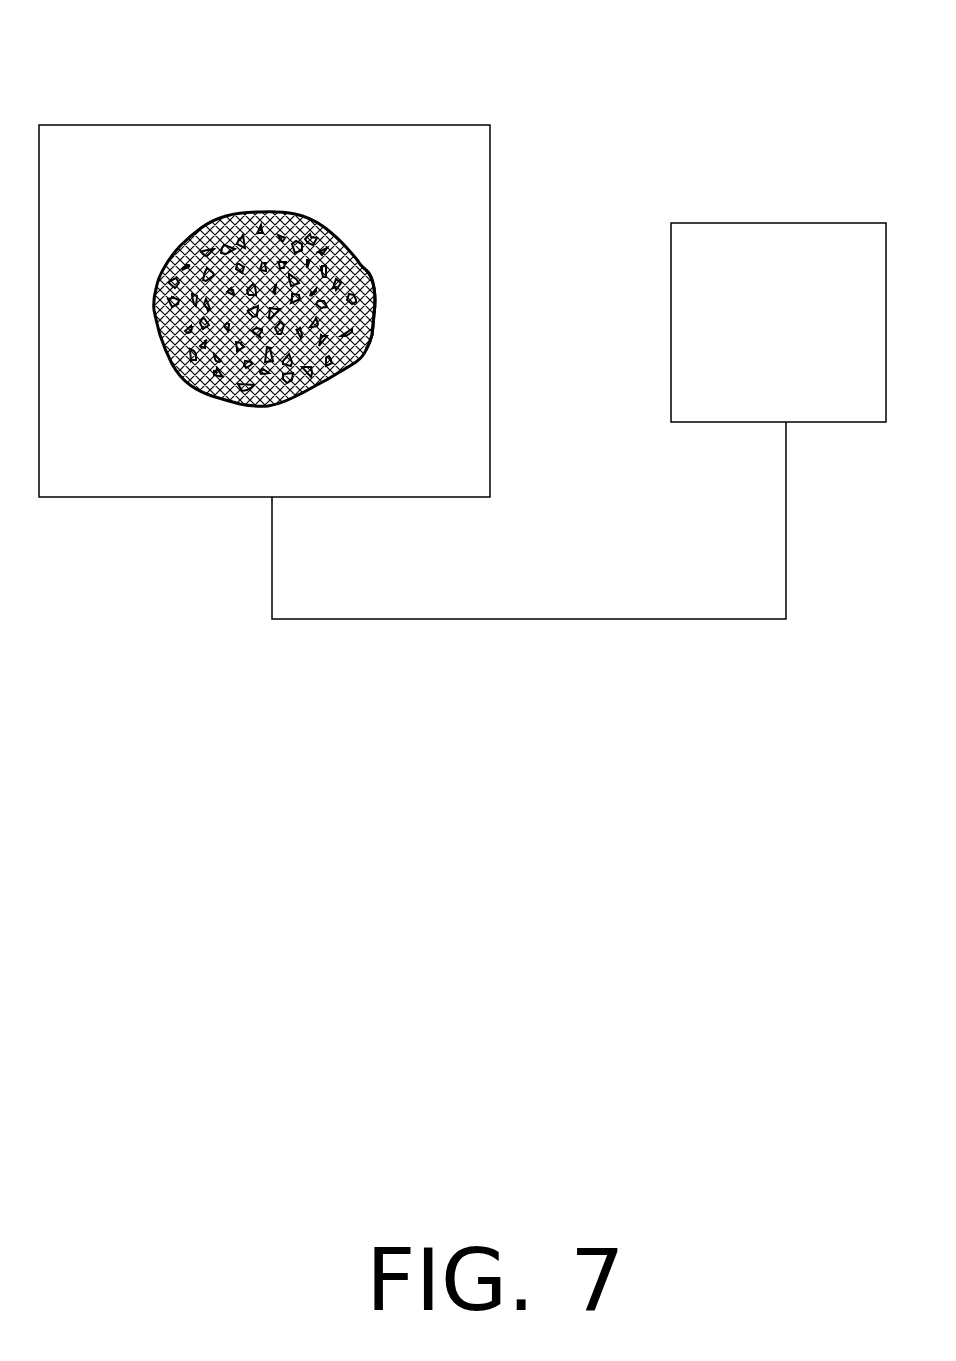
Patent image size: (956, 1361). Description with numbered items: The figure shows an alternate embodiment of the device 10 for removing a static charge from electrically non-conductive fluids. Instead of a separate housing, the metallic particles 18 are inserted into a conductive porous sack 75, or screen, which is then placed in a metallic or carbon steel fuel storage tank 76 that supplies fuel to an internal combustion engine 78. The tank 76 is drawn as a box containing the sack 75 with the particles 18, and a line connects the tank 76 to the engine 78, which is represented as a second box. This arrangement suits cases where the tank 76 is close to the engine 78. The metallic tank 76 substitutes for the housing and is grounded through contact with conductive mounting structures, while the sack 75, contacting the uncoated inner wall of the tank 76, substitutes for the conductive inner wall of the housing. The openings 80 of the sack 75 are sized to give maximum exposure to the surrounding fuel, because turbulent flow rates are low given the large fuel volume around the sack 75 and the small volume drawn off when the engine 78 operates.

The fuel storage tank 76 is at (283, 125).
The internal combustion engine 78 is at (710, 223).
The device 10 is at (328, 215).
The metallic particles 18 is at (277, 245).
The openings 80 is at (192, 245).
The conductive porous sack 75 is at (375, 292).